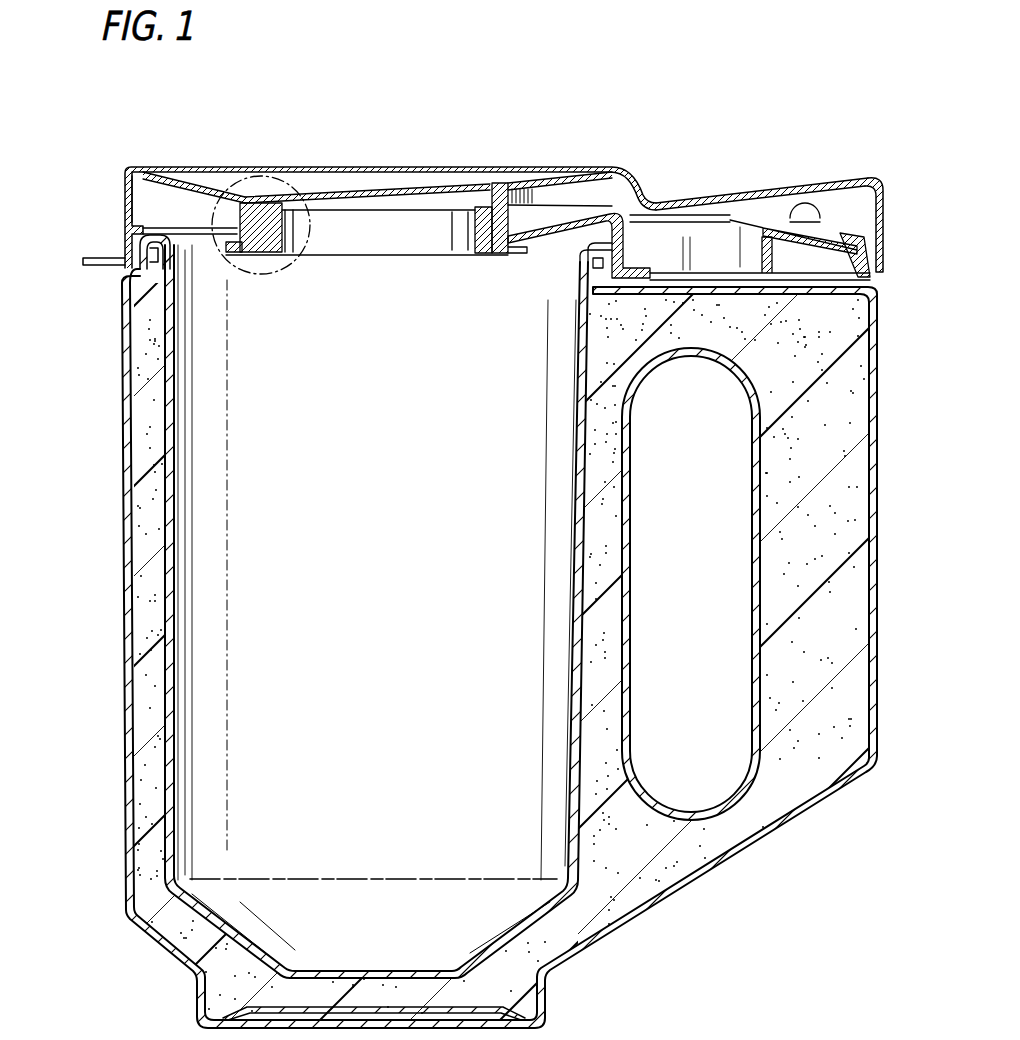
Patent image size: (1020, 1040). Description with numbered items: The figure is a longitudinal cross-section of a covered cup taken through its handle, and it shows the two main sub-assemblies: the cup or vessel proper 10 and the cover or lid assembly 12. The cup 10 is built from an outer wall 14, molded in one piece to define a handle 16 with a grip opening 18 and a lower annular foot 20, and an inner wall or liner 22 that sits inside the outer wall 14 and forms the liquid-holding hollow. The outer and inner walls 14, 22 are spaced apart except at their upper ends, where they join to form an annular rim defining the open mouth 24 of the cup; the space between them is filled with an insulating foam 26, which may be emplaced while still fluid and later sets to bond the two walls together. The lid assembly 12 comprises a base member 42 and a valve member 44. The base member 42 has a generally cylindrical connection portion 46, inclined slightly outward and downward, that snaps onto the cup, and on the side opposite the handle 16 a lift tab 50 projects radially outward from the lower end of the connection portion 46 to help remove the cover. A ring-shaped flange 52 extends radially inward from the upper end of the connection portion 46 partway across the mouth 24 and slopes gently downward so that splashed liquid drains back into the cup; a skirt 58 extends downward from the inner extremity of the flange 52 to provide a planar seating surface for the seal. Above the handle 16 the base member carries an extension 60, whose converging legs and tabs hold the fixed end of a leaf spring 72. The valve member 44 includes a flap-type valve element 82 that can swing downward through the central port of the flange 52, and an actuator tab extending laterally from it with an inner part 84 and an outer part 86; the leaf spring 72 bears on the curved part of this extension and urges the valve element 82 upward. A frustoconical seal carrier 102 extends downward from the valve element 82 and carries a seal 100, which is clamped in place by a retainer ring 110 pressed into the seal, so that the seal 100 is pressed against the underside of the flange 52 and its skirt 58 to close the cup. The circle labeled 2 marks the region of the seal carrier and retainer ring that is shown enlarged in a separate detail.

The enlarged detail area 2 is at (270, 278).
The cup or vessel proper 10 is at (803, 143).
The cover or lid assembly 12 is at (281, 125).
The outer wall 14 is at (120, 463).
The handle 16 is at (800, 810).
The grip opening 18 is at (750, 523).
The lower annular foot 20 is at (537, 1033).
The inner wall or liner 22 is at (174, 543).
The open mouth 24 is at (177, 242).
The foam 26 is at (667, 867).
The base member 42 is at (120, 187).
The valve member 44 is at (494, 180).
The connection portion 46 is at (125, 217).
The lift tab 50 is at (97, 270).
The ring-shaped flange 52 is at (213, 192).
The skirt 58 is at (255, 210).
The extension 60 is at (884, 210).
The leaf spring 72 is at (710, 213).
The flap-type valve element 82 is at (363, 195).
The inner part of actuator tab 84 is at (563, 177).
The outer part of actuator tab 86 is at (766, 197).
The seal 100 is at (475, 257).
The seal carrier 102 is at (508, 225).
The retainer ring 110 is at (288, 247).